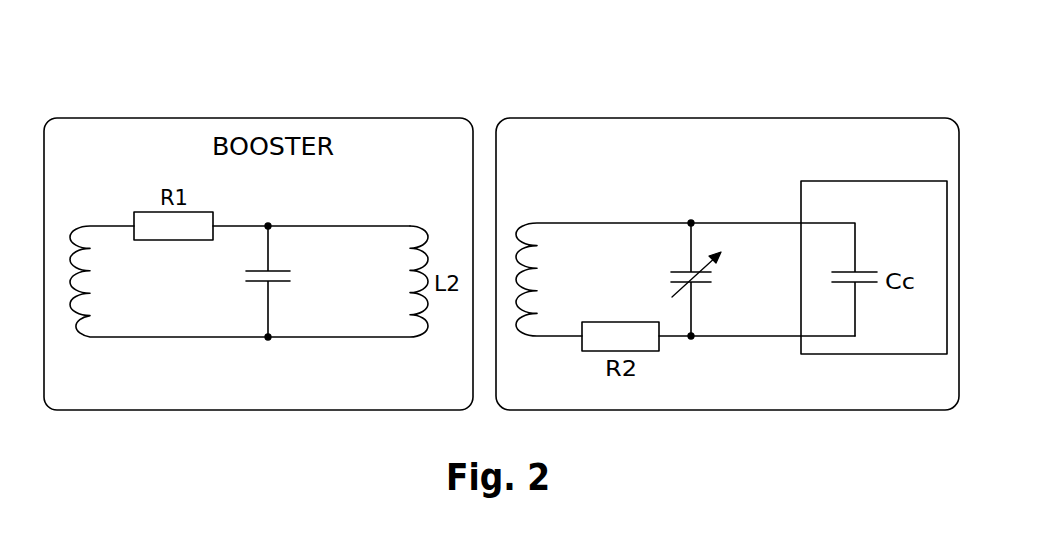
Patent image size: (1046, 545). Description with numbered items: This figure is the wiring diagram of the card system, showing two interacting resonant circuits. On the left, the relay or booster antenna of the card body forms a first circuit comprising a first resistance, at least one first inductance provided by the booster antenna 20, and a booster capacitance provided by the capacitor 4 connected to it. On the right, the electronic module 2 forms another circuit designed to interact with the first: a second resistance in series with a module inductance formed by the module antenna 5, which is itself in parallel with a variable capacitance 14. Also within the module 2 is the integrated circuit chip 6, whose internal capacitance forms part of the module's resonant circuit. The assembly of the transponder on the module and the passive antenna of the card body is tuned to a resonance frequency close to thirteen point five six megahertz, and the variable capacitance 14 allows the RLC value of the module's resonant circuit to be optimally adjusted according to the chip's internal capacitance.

The electronic module 2 is at (584, 118).
The integrated circuit chip 6 is at (920, 197).
The booster antenna 20 is at (126, 66).
The capacitor 4 is at (301, 281).
The antenna 5 is at (603, 279).
The variable capacitance 14 is at (731, 279).